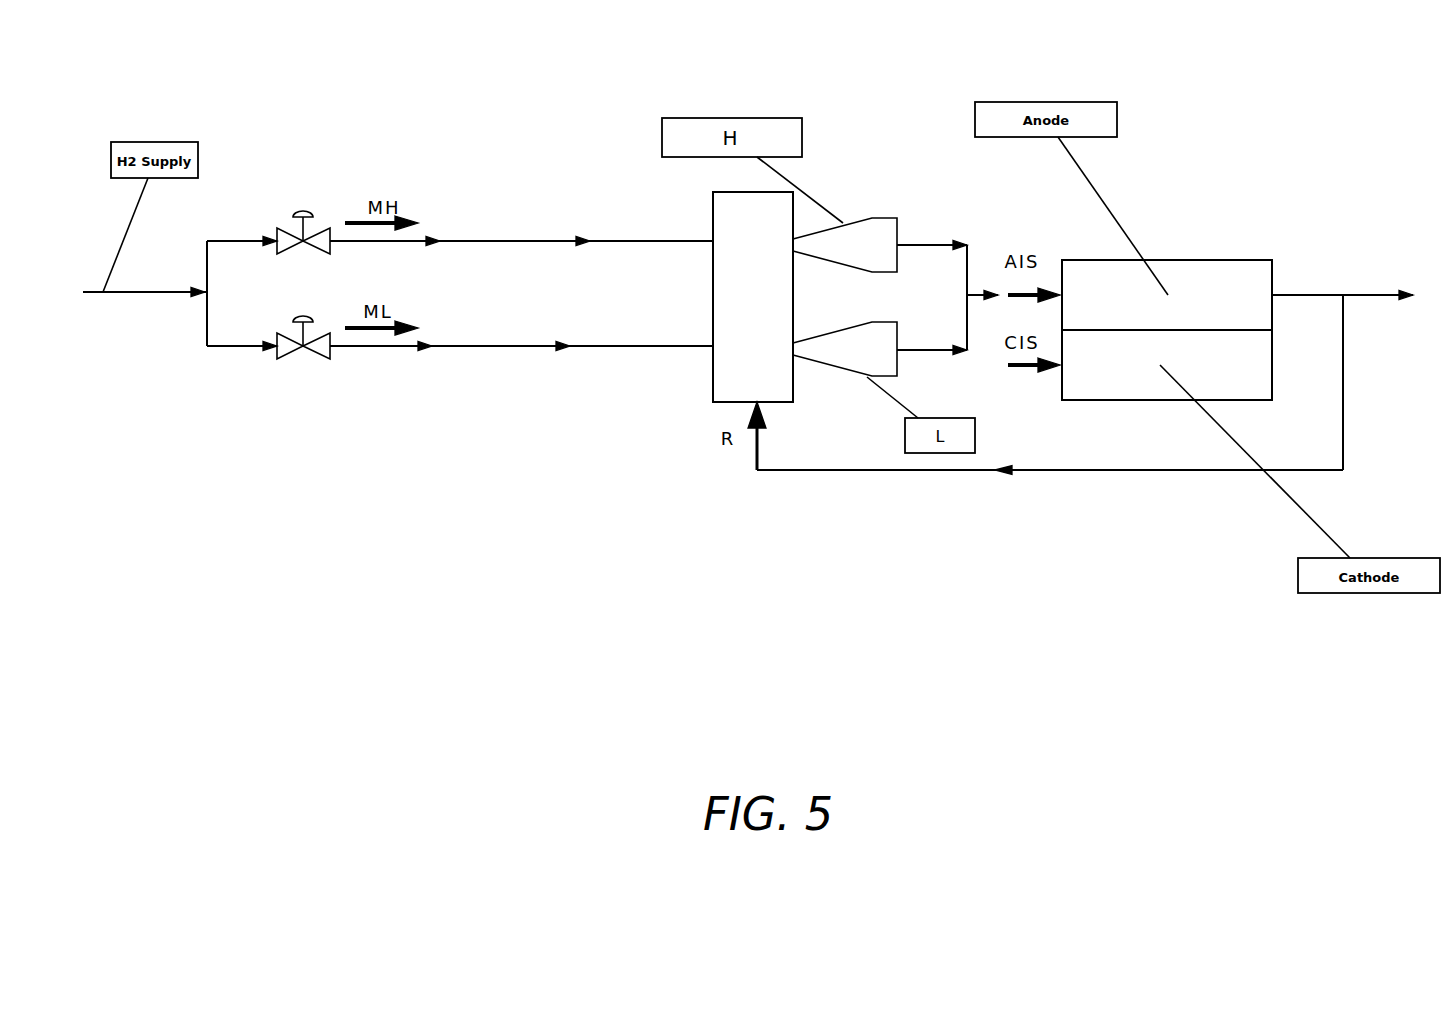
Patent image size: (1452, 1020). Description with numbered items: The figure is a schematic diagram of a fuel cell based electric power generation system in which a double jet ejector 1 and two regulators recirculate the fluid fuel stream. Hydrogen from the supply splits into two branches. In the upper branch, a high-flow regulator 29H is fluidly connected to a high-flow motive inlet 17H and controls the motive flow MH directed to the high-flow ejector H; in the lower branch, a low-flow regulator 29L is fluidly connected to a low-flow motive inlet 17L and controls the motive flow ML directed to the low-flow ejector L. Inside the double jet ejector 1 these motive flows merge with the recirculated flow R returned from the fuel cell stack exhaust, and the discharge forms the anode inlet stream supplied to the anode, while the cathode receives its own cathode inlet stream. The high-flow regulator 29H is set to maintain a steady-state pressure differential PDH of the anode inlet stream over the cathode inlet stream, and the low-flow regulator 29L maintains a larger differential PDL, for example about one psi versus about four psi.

The double jet ejector 1 is at (836, 180).
The high-flow motive inlet 17H is at (700, 231).
The low-flow motive inlet 17L is at (698, 359).
The high-flow regulator 29H is at (307, 217).
The low-flow regulator 29L is at (305, 348).